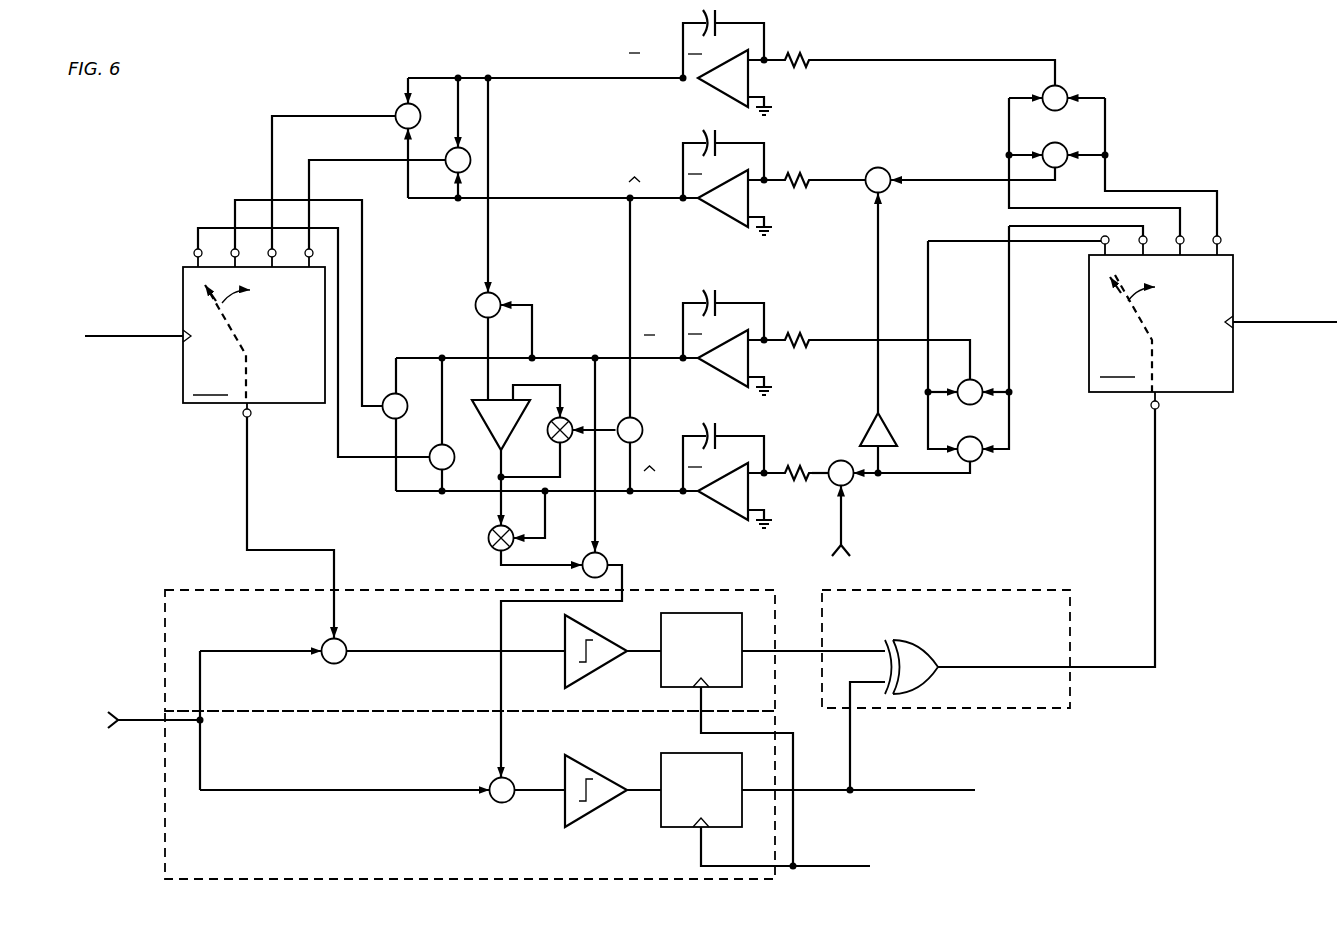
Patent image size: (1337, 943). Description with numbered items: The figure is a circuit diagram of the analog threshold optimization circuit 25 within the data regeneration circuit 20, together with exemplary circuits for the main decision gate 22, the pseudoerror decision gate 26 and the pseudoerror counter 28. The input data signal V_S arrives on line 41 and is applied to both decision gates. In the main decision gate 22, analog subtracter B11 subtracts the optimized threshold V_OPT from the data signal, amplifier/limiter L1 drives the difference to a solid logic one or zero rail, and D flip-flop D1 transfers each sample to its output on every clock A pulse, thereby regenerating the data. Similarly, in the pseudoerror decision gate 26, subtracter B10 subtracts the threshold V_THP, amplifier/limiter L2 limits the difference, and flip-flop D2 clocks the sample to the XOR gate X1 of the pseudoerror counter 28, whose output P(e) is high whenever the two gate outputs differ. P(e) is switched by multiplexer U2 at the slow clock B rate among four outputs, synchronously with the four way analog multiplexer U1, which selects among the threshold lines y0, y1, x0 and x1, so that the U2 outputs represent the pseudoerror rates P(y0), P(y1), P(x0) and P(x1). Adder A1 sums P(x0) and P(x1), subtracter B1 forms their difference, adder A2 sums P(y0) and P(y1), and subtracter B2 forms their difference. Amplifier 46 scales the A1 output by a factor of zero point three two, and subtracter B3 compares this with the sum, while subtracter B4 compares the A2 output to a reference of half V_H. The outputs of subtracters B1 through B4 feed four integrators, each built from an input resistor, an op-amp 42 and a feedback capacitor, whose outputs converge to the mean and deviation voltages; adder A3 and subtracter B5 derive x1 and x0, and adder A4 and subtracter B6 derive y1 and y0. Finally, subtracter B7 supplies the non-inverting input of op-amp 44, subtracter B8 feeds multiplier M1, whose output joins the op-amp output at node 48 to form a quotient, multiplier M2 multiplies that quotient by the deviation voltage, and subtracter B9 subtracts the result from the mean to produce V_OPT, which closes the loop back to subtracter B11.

The data regeneration circuit 20 is at (1252, 96).
The main decision gate 22 is at (313, 755).
The threshold optimization circuit 25 is at (568, 267).
The pseudoerror decision gate 26 is at (433, 629).
The pseudoerror counter 28 is at (1027, 590).
The line 41 is at (183, 727).
The op-amp 42 is at (868, 266).
The op-amp 44 is at (481, 419).
The amplifier 46 is at (888, 433).
The node 48 is at (489, 491).
The four way analog multiplexer U1 is at (183, 283).
The multiplexer U2 is at (1233, 258).
The subtracter B1 is at (1043, 110).
The subtracter B2 is at (868, 168).
The subtracter B3 is at (982, 400).
The subtracter B4 is at (852, 484).
The subtracter B5 is at (420, 111).
The subtracter B6 is at (455, 457).
The subtracter B7 is at (476, 307).
The subtracter B8 is at (642, 430).
The subtracter B9 is at (608, 558).
The subtracter B10 is at (344, 662).
The analog subtracter B11 is at (504, 803).
The adder A1 is at (1050, 144).
The adder A2 is at (982, 458).
The adder A3 is at (449, 170).
The adder A4 is at (386, 394).
The analog multiplier M1 is at (549, 440).
The analog multiplier M2 is at (488, 538).
The amplifier/limiter L1 is at (600, 641).
The amplifier/limiter L2 is at (600, 780).
The D flip-flop D1 is at (661, 684).
The flip-flop D2 is at (661, 823).
The XOR gate X1 is at (925, 657).